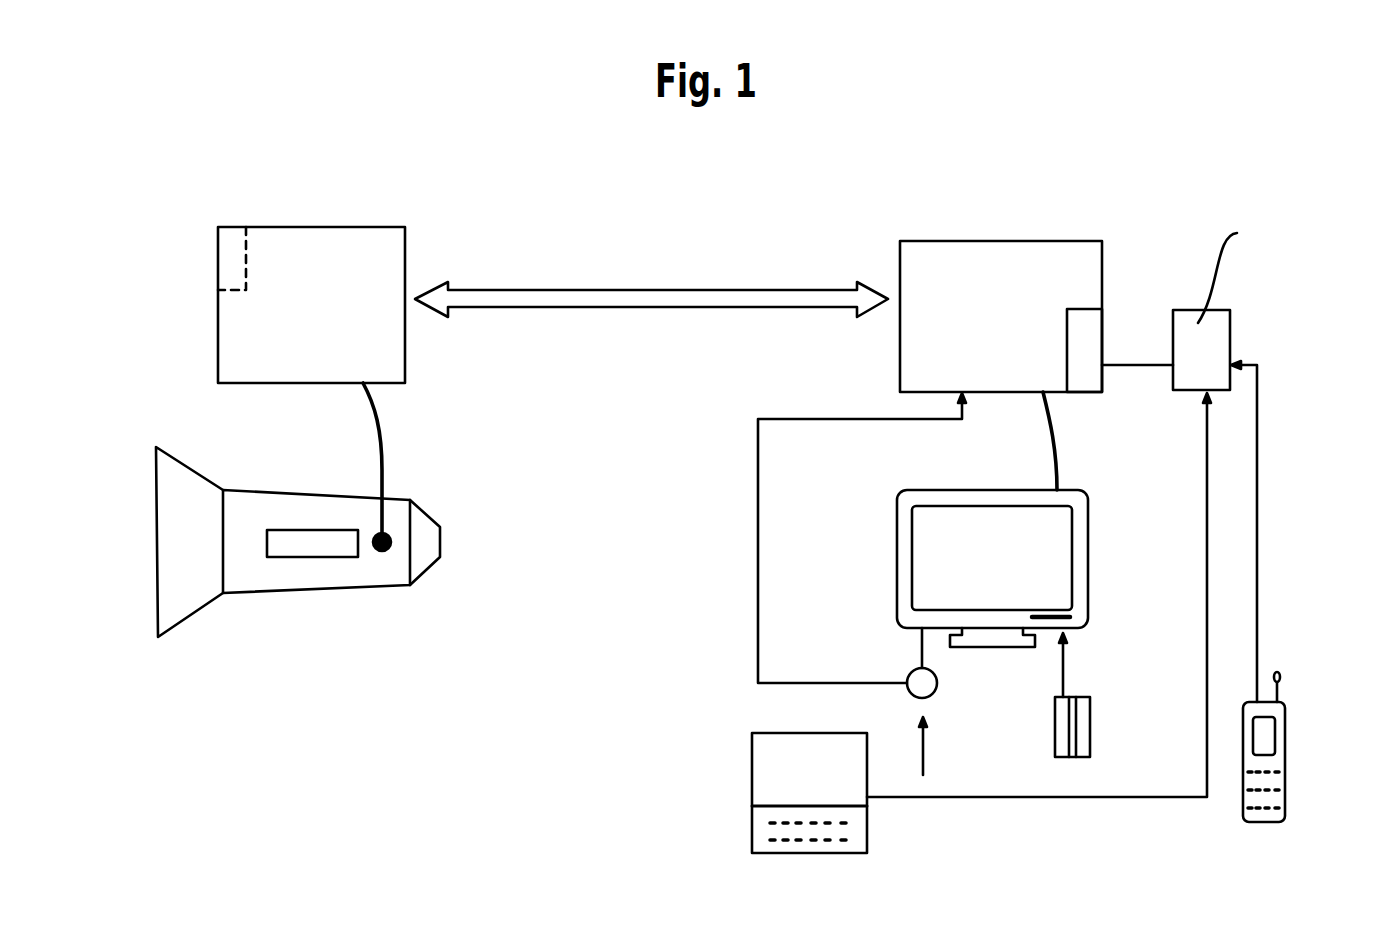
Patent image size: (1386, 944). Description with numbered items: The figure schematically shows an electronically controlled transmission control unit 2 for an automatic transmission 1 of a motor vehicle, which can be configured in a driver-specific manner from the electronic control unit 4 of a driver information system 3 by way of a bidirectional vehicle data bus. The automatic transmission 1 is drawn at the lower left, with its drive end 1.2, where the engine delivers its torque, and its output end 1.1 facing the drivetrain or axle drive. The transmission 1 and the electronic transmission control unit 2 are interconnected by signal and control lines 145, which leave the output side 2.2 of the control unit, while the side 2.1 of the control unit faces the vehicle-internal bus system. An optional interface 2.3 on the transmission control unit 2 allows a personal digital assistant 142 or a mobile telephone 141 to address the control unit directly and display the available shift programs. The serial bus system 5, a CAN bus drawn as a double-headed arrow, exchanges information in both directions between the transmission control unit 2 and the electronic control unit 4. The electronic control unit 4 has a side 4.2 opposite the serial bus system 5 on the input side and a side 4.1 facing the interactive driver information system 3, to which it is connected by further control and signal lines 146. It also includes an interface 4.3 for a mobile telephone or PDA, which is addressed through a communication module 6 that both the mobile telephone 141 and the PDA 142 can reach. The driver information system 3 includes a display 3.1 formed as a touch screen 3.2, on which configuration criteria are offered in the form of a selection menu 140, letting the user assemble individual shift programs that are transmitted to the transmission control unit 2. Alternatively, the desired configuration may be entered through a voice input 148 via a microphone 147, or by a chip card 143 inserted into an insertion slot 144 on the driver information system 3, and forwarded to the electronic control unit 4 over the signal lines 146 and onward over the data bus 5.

The automatic transmission 1 is at (291, 542).
The output end of automatic transmission 1.1 is at (470, 550).
The drive end of automatic transmission 1.2 is at (138, 542).
The electronic transmission control unit 2 is at (326, 327).
The bus side of electronic transmission control unit 2.1 is at (444, 360).
The output side of electronic transmission control unit 2.2 is at (256, 420).
The interface on electronic transmission control unit 2.3 is at (189, 258).
The driver information system 3 is at (996, 583).
The display 3.1 is at (1056, 556).
The touch screen 3.2 is at (944, 559).
The electronic control unit 4 is at (988, 332).
The side of electronic control unit facing driver information system 4.1 is at (1011, 432).
The input side of electronic control unit 4.2 is at (848, 355).
The interface for mobile telephone or PDA 4.3 is at (1113, 330).
The serial bus system 5 is at (651, 257).
The communication module 6 is at (1244, 300).
The selection menu 140 is at (845, 610).
The mobile telephone 141 is at (1305, 591).
The personal digital assistant 142 is at (927, 623).
The chip card 143 is at (1117, 695).
The insertion slot 144 is at (1098, 647).
The signal and control lines 145 is at (429, 458).
The control and signal lines 146 is at (1119, 441).
The microphone 147 is at (966, 686).
The voice input 148 is at (972, 751).